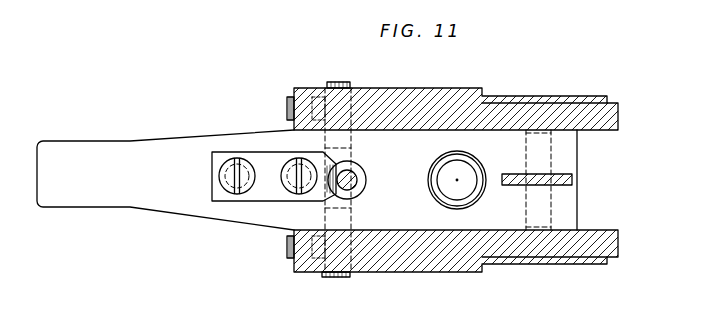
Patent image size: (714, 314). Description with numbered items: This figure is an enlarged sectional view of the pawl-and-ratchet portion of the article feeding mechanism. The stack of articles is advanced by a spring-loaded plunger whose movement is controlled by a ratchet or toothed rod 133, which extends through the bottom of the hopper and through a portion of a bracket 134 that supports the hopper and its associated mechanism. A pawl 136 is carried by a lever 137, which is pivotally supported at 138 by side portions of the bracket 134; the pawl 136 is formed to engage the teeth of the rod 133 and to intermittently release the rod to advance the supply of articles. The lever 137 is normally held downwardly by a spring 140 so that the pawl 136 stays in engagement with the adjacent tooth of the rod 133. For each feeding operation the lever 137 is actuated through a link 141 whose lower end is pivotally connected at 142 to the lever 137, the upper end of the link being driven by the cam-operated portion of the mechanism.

The ratchet or toothed rod 133 is at (351, 179).
The bracket 134 is at (463, 92).
The pawl 136 is at (265, 197).
The lever 137 is at (222, 213).
The pivot 138 is at (333, 82).
The spring 140 is at (441, 168).
The link 141 is at (572, 179).
The pivotal connection 142 is at (551, 208).